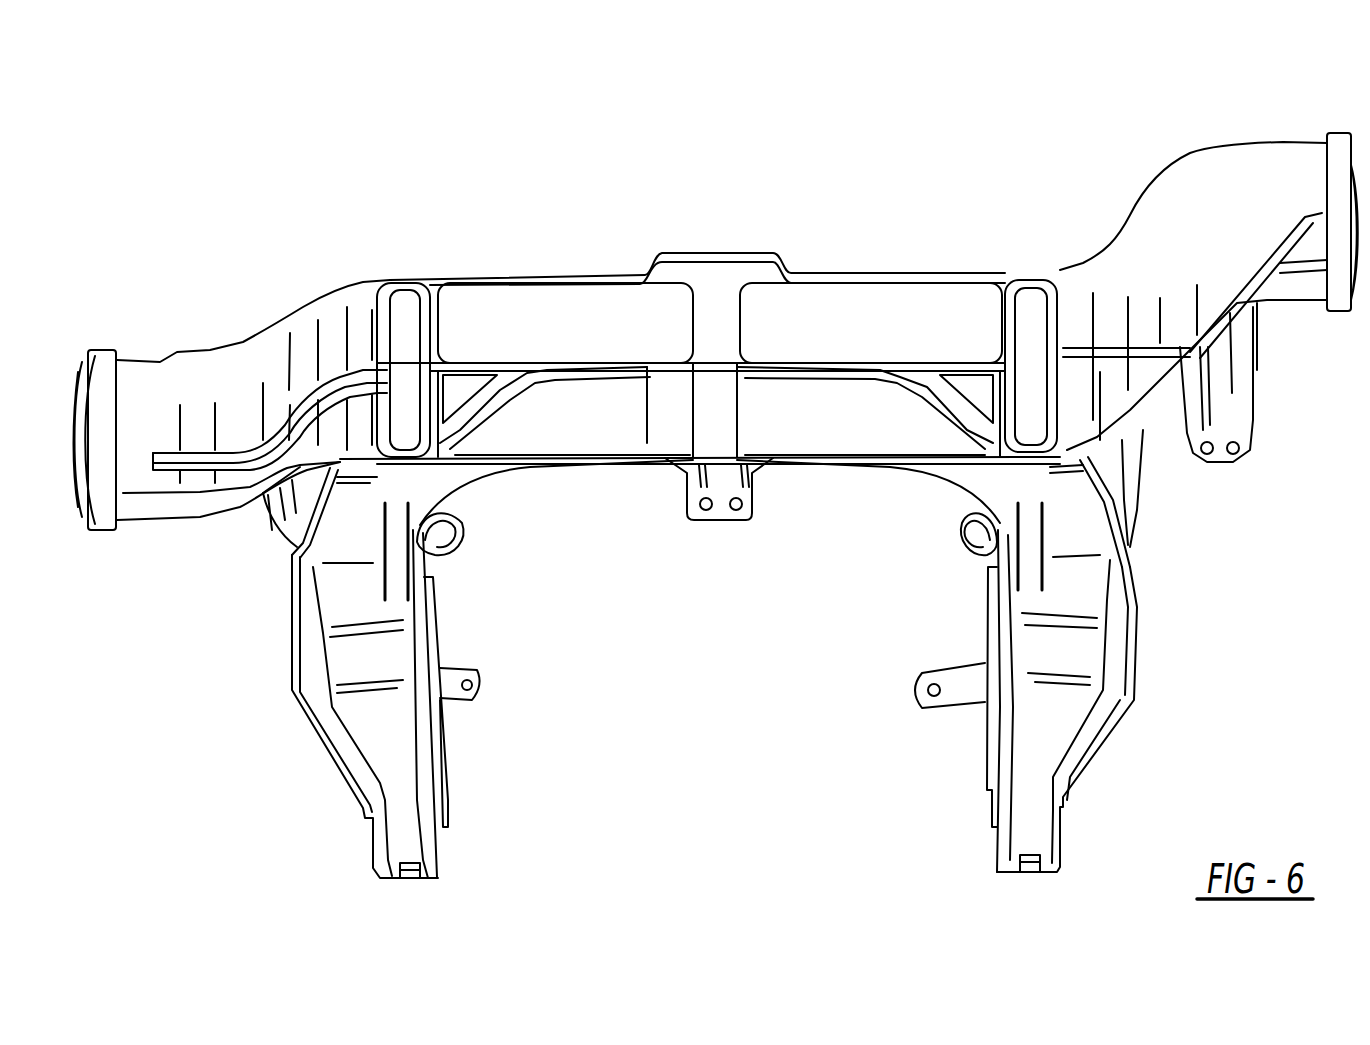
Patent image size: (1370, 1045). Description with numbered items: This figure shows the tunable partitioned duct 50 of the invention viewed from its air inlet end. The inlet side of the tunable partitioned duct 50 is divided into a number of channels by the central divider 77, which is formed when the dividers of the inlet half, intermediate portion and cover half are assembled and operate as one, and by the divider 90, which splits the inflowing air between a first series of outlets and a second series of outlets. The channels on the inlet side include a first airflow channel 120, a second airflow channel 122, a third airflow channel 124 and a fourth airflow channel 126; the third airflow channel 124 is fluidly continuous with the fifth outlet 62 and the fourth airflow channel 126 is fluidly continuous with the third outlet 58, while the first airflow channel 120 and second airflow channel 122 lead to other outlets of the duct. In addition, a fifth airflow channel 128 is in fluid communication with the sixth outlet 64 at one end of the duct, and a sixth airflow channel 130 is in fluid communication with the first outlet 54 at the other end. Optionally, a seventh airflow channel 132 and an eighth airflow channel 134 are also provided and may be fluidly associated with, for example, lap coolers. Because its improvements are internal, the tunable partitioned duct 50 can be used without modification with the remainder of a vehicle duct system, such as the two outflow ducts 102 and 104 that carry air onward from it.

The tunable partitioned duct 50 is at (240, 367).
The first outlet 54 is at (1343, 240).
The third outlet 58 is at (1073, 515).
The fifth outlet 62 is at (352, 530).
The sixth outlet 64 is at (85, 417).
The central divider 77 is at (720, 413).
The divider 90 is at (647, 443).
The outflow duct 102 is at (1078, 648).
The outflow duct 104 is at (370, 655).
The first airflow channel 120 is at (600, 324).
The second airflow channel 122 is at (836, 333).
The third airflow channel 124 is at (606, 434).
The fourth airflow channel 126 is at (840, 442).
The fifth airflow channel 128 is at (403, 317).
The sixth airflow channel 130 is at (1050, 300).
The seventh airflow channel 132 is at (460, 387).
The eighth airflow channel 134 is at (970, 383).